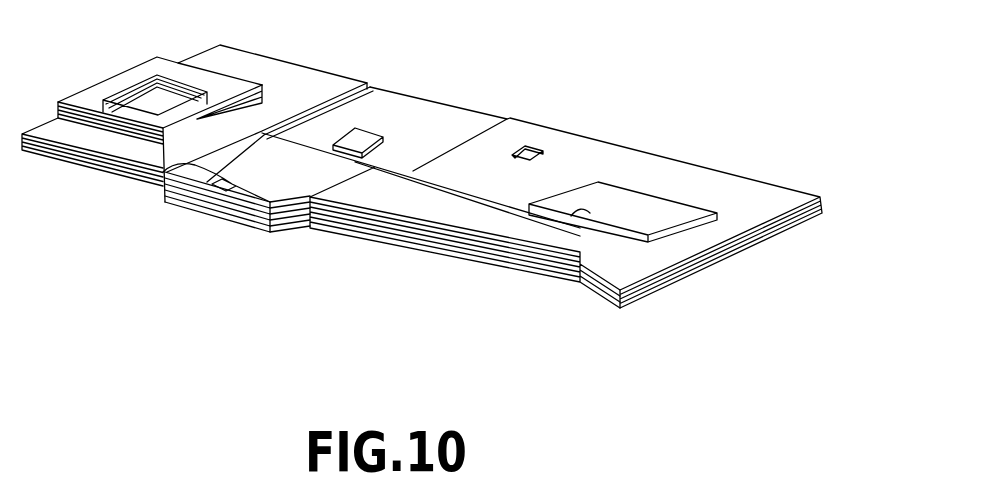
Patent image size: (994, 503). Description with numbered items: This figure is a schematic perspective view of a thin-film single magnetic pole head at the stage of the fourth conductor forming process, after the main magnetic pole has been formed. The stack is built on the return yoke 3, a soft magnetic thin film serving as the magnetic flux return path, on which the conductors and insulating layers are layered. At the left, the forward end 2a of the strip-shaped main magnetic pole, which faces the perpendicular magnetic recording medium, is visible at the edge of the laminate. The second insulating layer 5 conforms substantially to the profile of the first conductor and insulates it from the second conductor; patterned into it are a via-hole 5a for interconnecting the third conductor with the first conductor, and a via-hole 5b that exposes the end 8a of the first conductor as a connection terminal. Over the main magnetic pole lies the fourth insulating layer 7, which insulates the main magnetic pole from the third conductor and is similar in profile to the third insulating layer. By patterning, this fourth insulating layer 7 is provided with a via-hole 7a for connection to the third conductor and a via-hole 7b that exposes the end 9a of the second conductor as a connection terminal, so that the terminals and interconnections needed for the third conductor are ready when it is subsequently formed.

The forward end 2a is at (213, 185).
The return yoke 3 is at (417, 113).
The second insulating layer 5 is at (620, 157).
The via-hole 5a is at (528, 148).
The via-hole 5b is at (258, 77).
The fourth insulating layer 7 is at (393, 200).
The via-hole 7a is at (127, 90).
The via-hole 7b is at (582, 212).
The end of the first conductor 8a is at (319, 78).
The end of the second conductor 9a is at (647, 207).